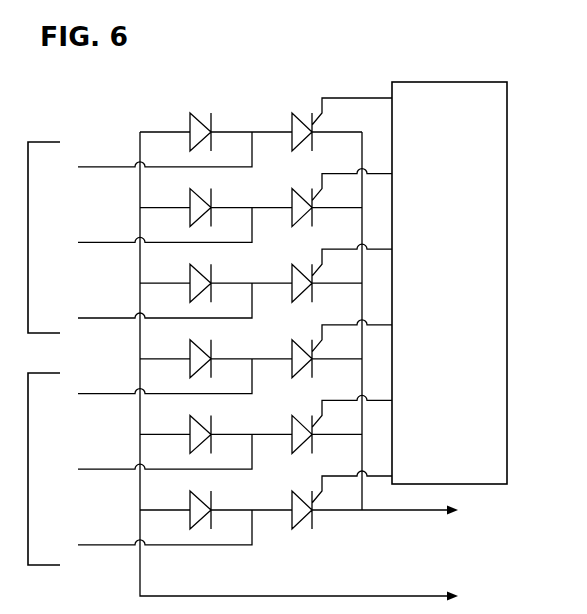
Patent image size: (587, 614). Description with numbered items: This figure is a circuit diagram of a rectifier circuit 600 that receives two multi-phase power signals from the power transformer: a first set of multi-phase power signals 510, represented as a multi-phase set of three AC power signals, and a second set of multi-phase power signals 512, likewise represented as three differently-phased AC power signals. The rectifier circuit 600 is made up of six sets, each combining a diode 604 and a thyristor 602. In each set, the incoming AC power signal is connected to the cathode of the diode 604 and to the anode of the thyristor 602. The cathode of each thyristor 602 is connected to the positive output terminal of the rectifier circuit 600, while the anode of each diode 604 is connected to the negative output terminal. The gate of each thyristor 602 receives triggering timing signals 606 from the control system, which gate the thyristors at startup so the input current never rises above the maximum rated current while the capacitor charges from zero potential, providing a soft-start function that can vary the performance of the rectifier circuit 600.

The rectifier circuit 600 is at (226, 46).
The first set of multi-phase power signals 510 is at (40, 142).
The second set of multi-phase power signals 512 is at (40, 567).
The diode 604 is at (190, 111).
The thyristor 602 is at (291, 103).
The timing signals 606 is at (473, 91).